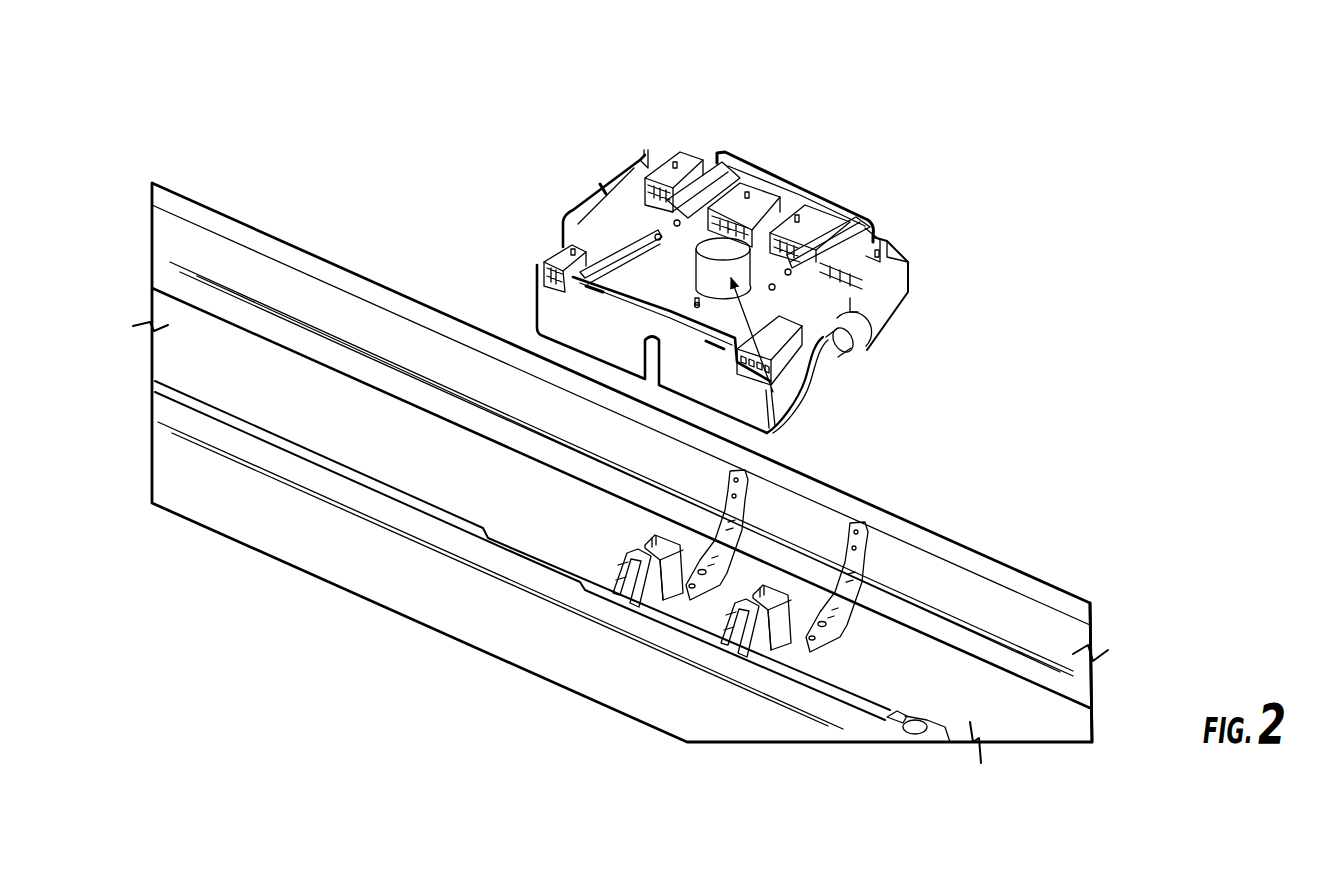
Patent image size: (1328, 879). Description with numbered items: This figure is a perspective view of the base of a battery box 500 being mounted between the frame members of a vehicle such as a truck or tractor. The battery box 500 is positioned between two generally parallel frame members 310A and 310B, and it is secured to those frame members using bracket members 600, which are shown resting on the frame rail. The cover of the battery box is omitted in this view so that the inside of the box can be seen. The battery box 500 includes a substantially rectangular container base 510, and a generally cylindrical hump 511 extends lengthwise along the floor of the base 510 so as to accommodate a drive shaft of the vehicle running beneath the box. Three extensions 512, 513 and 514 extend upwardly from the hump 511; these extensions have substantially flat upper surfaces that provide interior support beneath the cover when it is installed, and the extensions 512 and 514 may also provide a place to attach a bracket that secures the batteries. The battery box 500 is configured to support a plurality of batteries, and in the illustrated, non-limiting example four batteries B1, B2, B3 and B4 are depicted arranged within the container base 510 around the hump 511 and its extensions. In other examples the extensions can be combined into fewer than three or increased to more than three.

The battery box 500 is at (747, 239).
The container base 510 is at (885, 313).
The hump 511 is at (608, 227).
The extension 512 is at (660, 226).
The extension 513 is at (773, 392).
The extension 514 is at (845, 345).
The battery B1 is at (709, 155).
The battery B2 is at (815, 200).
The battery B3 is at (662, 262).
The battery B4 is at (767, 337).
The bracket members 600 is at (850, 592).
The frame member 310A is at (753, 716).
The frame member 310B is at (1048, 652).